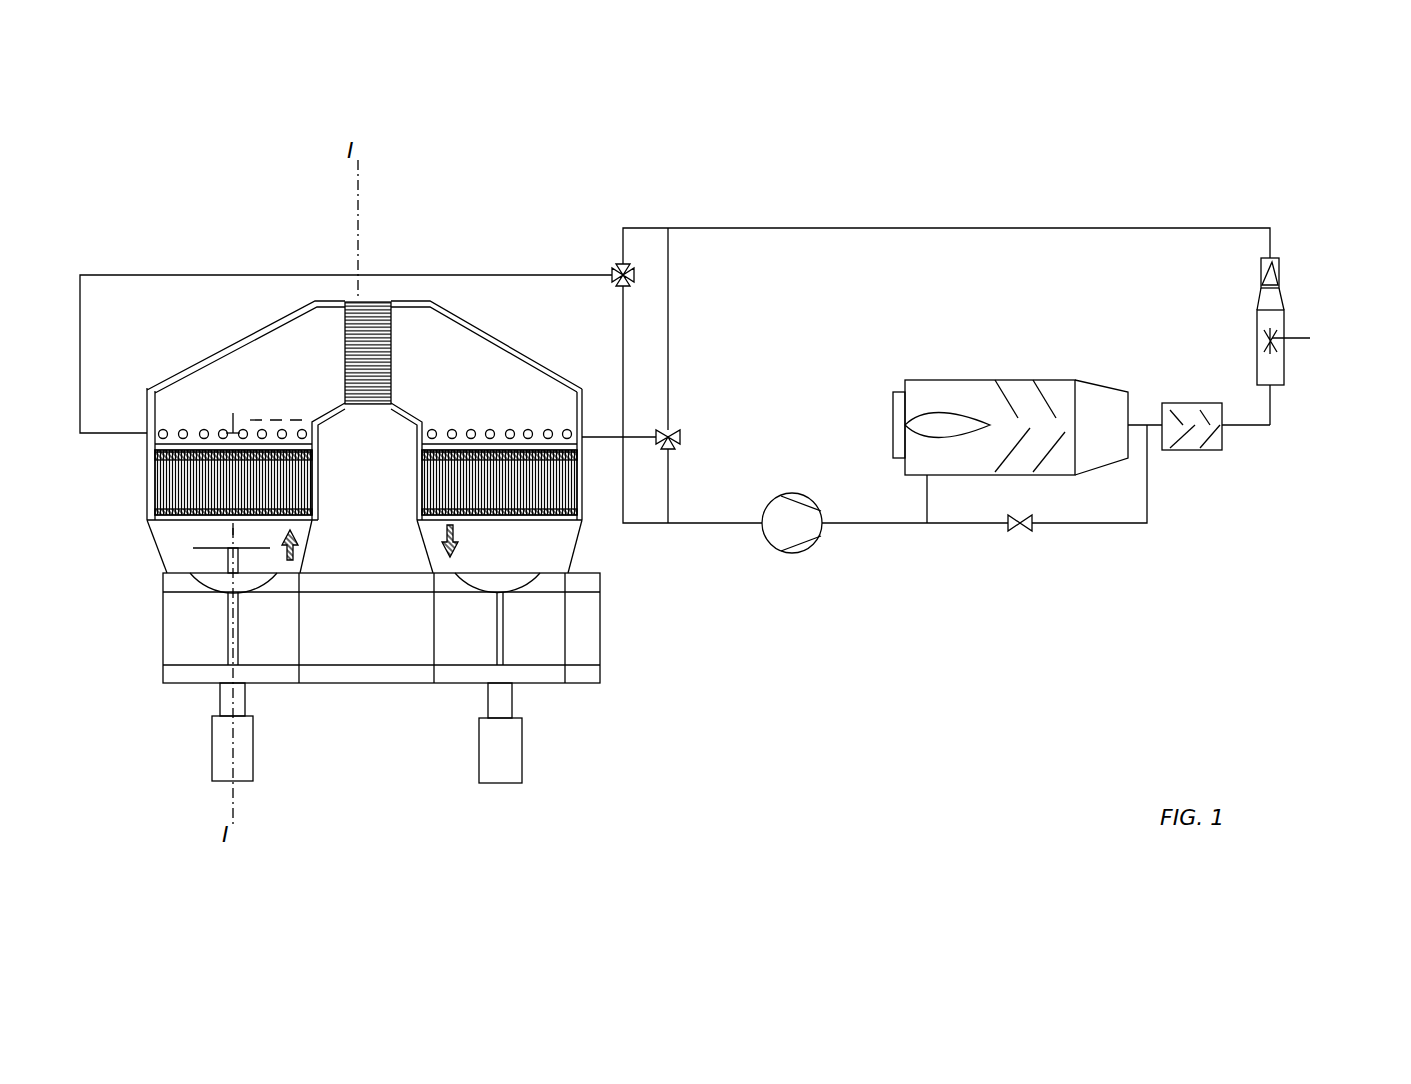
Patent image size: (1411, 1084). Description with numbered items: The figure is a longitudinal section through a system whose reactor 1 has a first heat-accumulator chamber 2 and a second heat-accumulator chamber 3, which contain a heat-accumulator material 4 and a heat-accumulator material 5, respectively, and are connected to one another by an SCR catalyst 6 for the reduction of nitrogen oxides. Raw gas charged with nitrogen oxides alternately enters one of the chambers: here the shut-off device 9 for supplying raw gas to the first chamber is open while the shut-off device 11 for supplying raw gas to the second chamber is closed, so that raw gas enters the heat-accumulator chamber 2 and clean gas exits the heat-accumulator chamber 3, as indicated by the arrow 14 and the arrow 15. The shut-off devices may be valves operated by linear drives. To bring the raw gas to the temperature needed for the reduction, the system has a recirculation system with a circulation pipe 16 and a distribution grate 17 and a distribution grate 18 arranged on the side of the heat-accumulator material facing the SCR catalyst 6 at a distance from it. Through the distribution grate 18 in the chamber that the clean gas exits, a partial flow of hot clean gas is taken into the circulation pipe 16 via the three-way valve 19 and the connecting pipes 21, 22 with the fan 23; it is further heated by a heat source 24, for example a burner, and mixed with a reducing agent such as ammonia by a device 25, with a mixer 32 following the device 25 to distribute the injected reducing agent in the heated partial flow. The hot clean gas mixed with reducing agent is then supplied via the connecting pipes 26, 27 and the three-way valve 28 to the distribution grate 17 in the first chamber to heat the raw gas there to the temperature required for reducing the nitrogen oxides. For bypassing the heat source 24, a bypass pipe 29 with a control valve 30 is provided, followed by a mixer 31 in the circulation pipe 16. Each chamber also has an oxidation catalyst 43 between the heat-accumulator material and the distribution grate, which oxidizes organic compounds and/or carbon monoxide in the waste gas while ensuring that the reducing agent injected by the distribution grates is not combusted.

The reactor 1 is at (463, 308).
The first heat-accumulator chamber 2 is at (275, 377).
The second heat-accumulator chamber 3 is at (463, 370).
The heat-accumulator material 4 is at (165, 488).
The heat-accumulator material 5 is at (580, 515).
The SCR catalyst 6 is at (368, 300).
The shut-off device 9 is at (218, 555).
The shut-off device 11 is at (522, 568).
The arrow 14 is at (298, 547).
The arrow 15 is at (440, 545).
The circulation pipe 16 is at (922, 228).
The distribution grate 17 is at (222, 430).
The distribution grate 18 is at (532, 430).
The three-way valve 19 is at (684, 428).
The connecting pipe 21 is at (600, 436).
The connecting pipe 22 is at (672, 486).
The fan 23 is at (778, 553).
The heat source 24 is at (963, 380).
The device for supplying the reducing agent 25 is at (1300, 330).
The connecting pipe 26 is at (620, 242).
The connecting pipe 27 is at (222, 252).
The three-way valve 28 is at (634, 275).
The bypass pipe 29 is at (1062, 530).
The control valve 30 is at (1034, 505).
The mixer 31 is at (1195, 452).
The mixer 32 is at (1282, 270).
The oxidation catalyst 43 is at (158, 456).